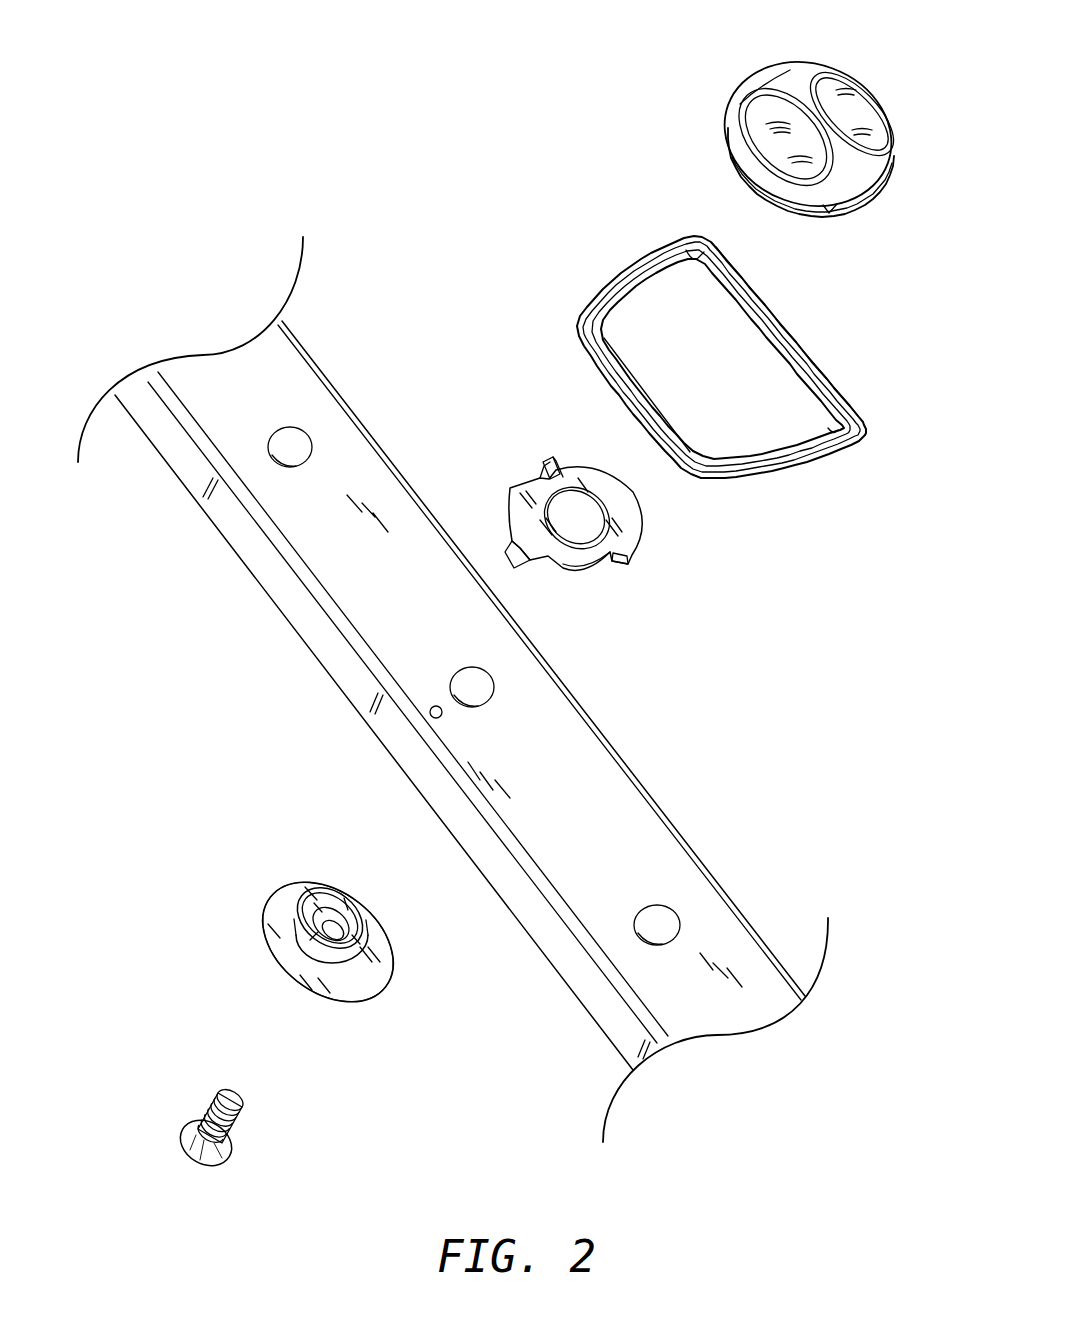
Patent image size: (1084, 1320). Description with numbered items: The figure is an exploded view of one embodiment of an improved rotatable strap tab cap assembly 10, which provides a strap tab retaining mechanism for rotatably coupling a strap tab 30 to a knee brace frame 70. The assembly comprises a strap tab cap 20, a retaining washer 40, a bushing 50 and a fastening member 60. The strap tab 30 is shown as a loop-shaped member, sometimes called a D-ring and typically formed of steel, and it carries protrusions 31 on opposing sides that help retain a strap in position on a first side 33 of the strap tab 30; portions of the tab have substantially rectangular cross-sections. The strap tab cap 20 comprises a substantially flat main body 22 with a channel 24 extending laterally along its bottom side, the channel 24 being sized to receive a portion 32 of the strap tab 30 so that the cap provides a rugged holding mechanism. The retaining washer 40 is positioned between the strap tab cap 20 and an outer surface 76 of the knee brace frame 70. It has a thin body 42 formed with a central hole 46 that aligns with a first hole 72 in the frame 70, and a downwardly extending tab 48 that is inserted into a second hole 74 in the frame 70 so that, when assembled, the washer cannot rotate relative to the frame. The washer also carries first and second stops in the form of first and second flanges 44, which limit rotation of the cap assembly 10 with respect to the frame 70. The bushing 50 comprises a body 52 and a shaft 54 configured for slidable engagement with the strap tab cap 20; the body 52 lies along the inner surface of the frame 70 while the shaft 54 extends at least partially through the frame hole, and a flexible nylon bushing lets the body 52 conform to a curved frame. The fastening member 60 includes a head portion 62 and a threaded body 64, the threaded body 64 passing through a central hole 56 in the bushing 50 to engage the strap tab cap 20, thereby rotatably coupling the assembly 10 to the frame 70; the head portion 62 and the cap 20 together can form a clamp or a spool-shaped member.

The rotatable strap tab cap assembly 10 is at (405, 140).
The strap tab cap 20 is at (857, 78).
The main body 22 is at (878, 154).
The channel 24 is at (830, 214).
The strap tab 30 is at (803, 334).
The protrusions 31 is at (699, 264).
The portion of the strap tab 32 is at (641, 405).
The first side of the strap tab 33 is at (777, 320).
The retaining washer 40 is at (645, 530).
The thin body 42 is at (566, 470).
The first and second flanges 44 is at (544, 470).
The central hole 46 is at (578, 520).
The downwardly extending tab 48 is at (513, 560).
The bushing 50 is at (303, 882).
The body 52 is at (352, 988).
The shaft 54 is at (357, 962).
The central hole 56 is at (340, 936).
The fastening member 60 is at (238, 1131).
The head portion 62 is at (190, 1143).
The threaded body 64 is at (205, 1112).
The knee brace frame 70 is at (617, 751).
The first hole 72 is at (494, 702).
The second hole 74 is at (430, 709).
The outer surface 76 is at (370, 612).